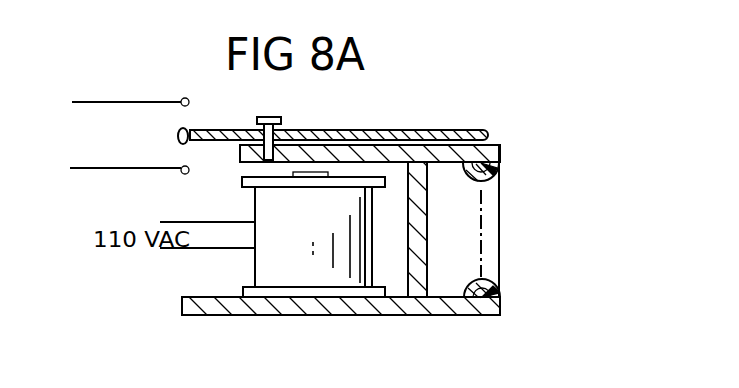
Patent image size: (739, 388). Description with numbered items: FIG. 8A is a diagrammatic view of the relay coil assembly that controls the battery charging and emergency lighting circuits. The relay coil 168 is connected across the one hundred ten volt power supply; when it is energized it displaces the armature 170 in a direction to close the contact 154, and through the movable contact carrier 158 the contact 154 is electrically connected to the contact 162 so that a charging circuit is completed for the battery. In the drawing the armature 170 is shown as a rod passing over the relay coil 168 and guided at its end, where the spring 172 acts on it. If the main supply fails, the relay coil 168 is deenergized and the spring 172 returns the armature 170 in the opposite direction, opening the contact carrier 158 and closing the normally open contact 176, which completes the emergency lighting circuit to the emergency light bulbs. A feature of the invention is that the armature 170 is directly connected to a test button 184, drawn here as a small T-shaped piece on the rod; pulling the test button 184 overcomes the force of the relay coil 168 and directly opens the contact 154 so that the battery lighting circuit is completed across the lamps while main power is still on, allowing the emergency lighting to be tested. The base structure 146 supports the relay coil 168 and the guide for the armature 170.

The normally open contact 176 is at (187, 98).
The contact 154 is at (183, 175).
The contact 162 is at (178, 135).
The movable contact carrier 158 is at (399, 130).
The test button 184 is at (271, 118).
The armature 170 is at (460, 132).
The spring 172 is at (500, 222).
The base plate 146 is at (463, 323).
The relay coil 168 is at (260, 263).